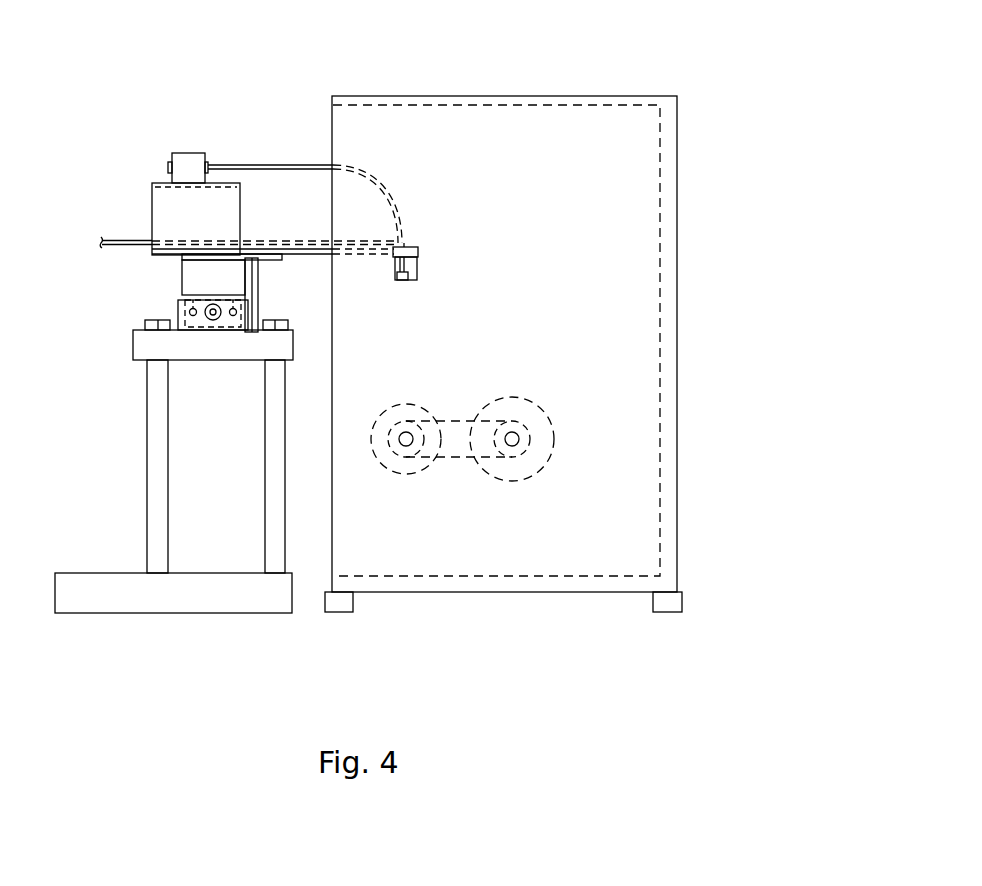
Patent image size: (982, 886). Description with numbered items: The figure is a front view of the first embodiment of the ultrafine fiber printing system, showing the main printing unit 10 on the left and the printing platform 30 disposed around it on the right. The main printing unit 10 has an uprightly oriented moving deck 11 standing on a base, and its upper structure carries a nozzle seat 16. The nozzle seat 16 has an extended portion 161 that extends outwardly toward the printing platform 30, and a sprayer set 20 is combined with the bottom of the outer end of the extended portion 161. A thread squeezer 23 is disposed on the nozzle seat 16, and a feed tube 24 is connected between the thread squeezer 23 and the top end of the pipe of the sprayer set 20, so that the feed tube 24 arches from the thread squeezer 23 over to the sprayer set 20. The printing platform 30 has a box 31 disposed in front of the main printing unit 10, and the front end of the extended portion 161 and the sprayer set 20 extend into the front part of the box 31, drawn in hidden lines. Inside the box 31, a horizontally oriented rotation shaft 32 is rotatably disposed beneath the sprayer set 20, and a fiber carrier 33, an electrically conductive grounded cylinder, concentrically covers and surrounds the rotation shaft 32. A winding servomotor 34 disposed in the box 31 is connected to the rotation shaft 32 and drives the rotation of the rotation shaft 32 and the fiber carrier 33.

The main printing unit 10 is at (106, 86).
The moving deck 11 is at (75, 586).
The nozzle seat 16 is at (188, 273).
The extended portion 161 is at (357, 253).
The sprayer set 20 is at (391, 302).
The thread squeezer 23 is at (183, 154).
The feed tube 24 is at (305, 162).
The printing platform 30 is at (760, 368).
The box 31 is at (648, 292).
The rotation shaft 32 is at (406, 447).
The fiber carrier 33 is at (415, 403).
The winding servomotor 34 is at (545, 470).